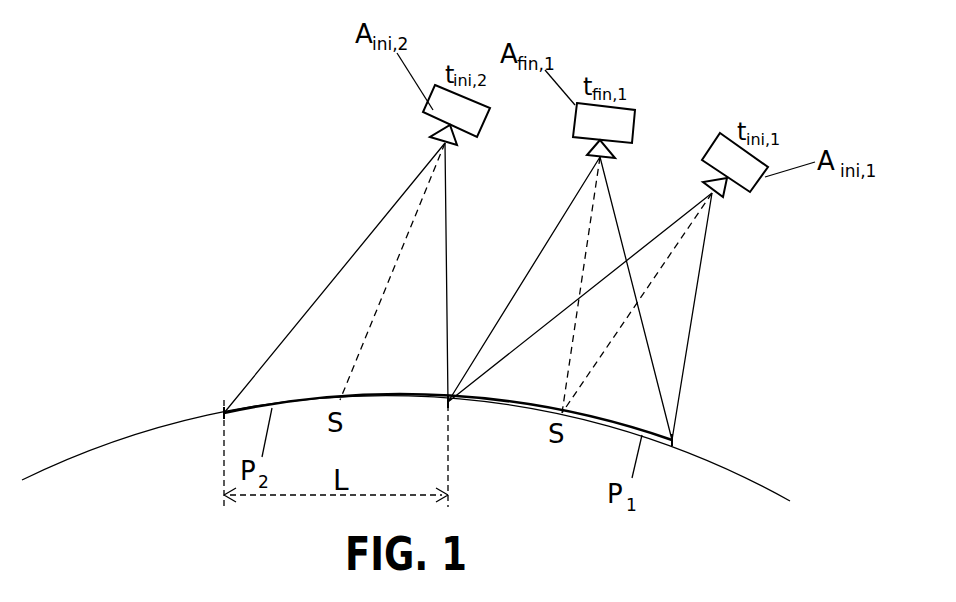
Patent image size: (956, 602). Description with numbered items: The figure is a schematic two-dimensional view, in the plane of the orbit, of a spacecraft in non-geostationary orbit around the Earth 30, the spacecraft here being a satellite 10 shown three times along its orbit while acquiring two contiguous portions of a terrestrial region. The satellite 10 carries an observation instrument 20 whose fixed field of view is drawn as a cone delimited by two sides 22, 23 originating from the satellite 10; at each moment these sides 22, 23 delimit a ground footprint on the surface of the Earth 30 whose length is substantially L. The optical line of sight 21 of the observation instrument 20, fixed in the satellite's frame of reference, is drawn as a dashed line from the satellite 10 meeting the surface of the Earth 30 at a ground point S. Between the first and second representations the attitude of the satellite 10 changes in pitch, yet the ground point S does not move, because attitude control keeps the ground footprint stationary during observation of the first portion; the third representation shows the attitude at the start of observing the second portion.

The satellite 10 is at (483, 133).
The observation instrument 20 is at (438, 133).
The optical line of sight 21 is at (388, 275).
The side of field of view cone 22 is at (447, 240).
The side of field of view cone 23 is at (302, 318).
The Earth 30 is at (83, 450).